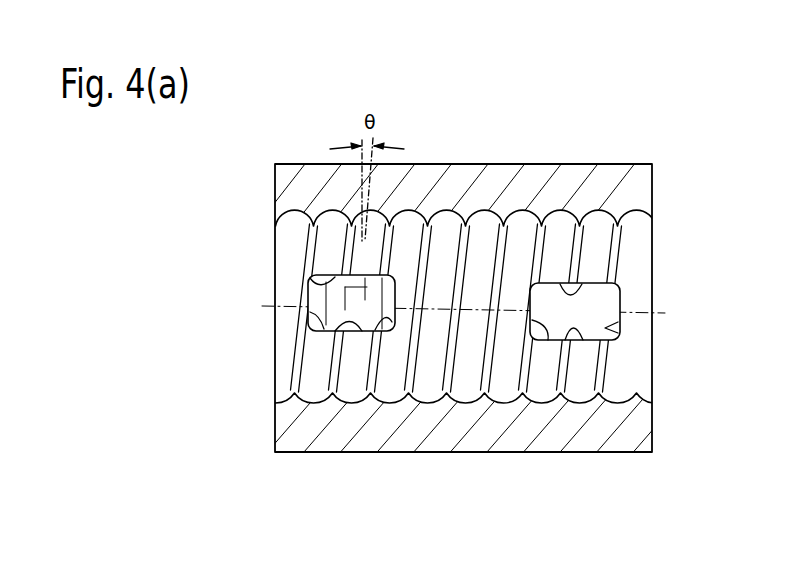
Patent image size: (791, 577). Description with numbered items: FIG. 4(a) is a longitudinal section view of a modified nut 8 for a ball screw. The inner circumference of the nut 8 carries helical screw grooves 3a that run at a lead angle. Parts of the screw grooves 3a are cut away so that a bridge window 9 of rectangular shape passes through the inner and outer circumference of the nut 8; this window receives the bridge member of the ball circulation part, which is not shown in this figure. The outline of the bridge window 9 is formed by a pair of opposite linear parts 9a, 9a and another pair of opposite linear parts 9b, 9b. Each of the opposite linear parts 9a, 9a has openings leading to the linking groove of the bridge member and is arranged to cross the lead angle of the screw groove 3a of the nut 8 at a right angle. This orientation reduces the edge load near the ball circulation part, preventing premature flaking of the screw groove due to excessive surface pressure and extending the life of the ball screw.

The nut 8 is at (496, 164).
The screw groove 3a is at (446, 236).
The bridge window 9 is at (308, 303).
The opposite linear part 9a is at (312, 280).
The opposite linear part 9b is at (312, 330).